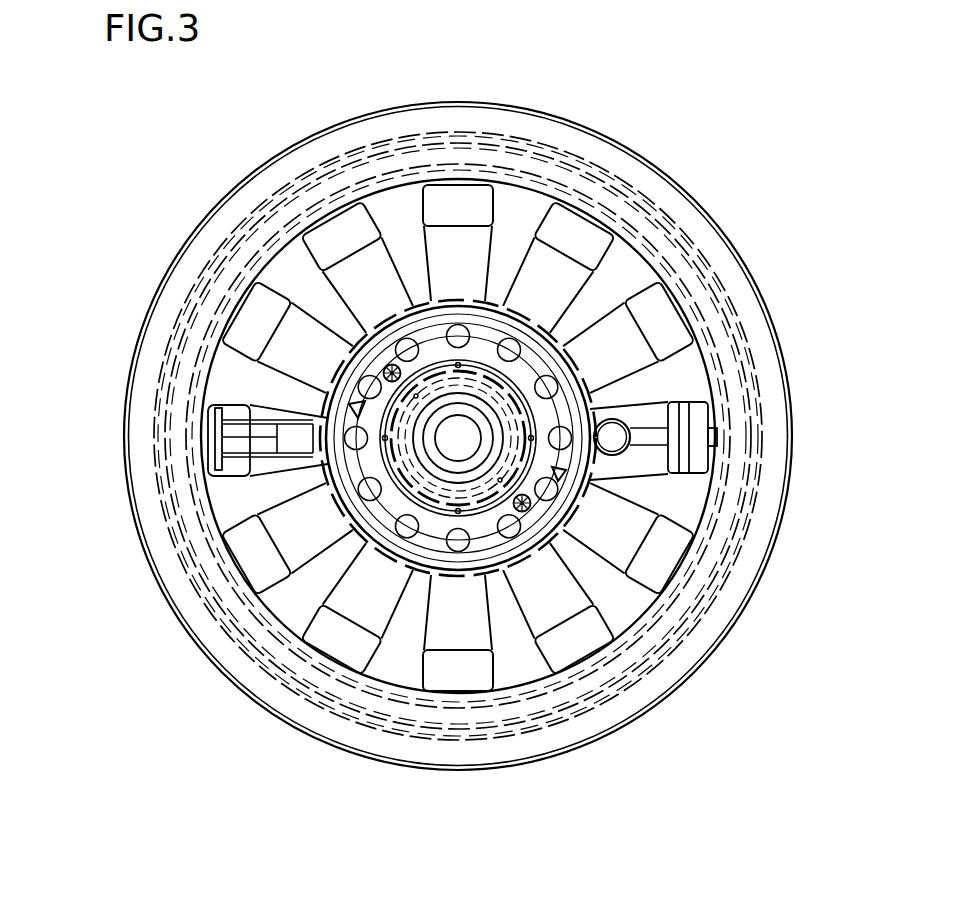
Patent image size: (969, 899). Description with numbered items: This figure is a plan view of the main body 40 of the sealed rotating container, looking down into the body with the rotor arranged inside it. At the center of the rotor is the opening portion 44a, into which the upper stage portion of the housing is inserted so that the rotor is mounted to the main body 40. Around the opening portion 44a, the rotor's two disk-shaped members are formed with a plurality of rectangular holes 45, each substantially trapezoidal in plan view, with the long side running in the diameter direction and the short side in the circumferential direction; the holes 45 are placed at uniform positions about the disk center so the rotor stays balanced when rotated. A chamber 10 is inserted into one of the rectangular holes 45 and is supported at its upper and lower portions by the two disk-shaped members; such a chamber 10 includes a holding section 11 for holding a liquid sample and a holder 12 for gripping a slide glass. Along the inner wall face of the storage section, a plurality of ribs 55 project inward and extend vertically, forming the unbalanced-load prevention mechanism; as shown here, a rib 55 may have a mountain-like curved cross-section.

The main body 40 is at (780, 335).
The rib 55 is at (455, 142).
The rectangular hole 45 is at (277, 345).
The opening portion 44a is at (520, 412).
The chamber 10 is at (700, 422).
The holding section 11 is at (620, 450).
The holder 12 is at (702, 473).